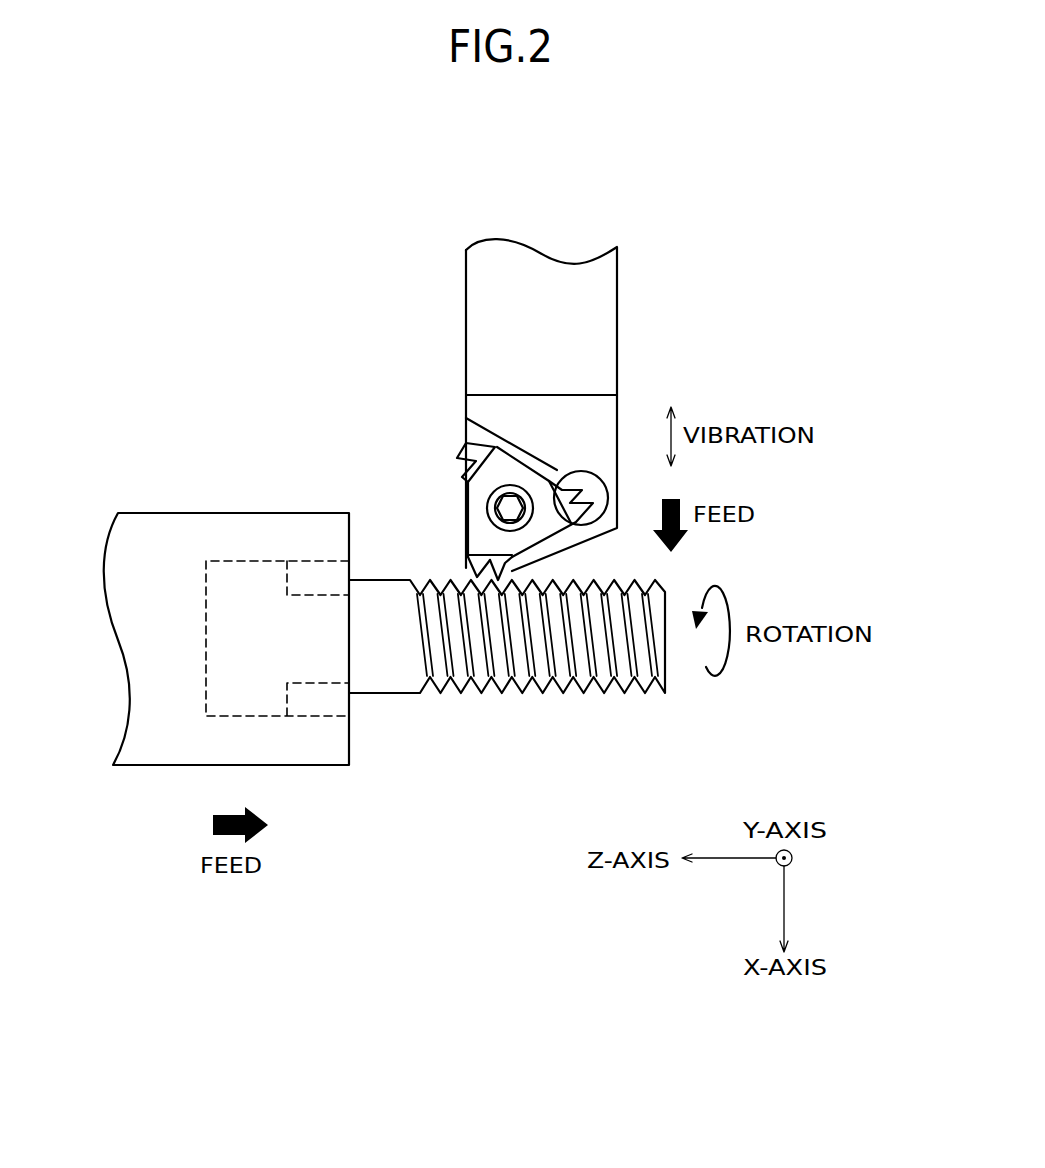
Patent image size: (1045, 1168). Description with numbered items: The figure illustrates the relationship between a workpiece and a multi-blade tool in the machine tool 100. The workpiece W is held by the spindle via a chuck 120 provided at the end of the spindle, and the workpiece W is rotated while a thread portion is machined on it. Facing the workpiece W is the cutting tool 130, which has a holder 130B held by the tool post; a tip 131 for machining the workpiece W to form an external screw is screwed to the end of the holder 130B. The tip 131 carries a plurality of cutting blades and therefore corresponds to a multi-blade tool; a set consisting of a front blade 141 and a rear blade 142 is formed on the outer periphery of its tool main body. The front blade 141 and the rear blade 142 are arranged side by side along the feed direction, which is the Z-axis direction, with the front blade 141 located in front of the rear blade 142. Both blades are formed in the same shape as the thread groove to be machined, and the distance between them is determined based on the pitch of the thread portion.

The machine tool 100 is at (301, 422).
The chuck 120 is at (198, 527).
The cutting tool 130 is at (421, 260).
The holder 130B is at (592, 298).
The tip 131 is at (511, 452).
The front blade 141 is at (468, 568).
The rear blade 142 is at (505, 577).
The workpiece W is at (508, 697).